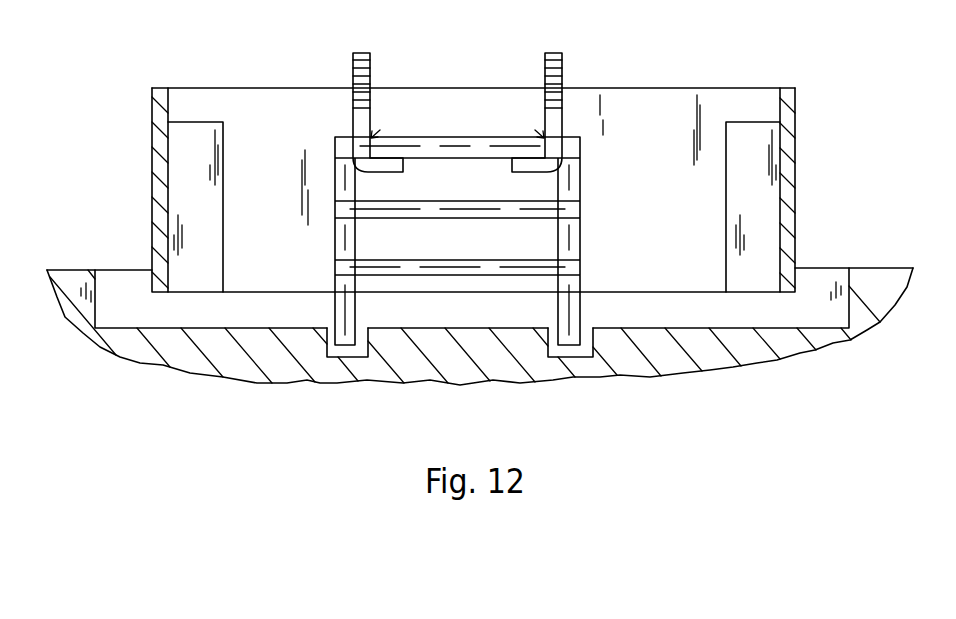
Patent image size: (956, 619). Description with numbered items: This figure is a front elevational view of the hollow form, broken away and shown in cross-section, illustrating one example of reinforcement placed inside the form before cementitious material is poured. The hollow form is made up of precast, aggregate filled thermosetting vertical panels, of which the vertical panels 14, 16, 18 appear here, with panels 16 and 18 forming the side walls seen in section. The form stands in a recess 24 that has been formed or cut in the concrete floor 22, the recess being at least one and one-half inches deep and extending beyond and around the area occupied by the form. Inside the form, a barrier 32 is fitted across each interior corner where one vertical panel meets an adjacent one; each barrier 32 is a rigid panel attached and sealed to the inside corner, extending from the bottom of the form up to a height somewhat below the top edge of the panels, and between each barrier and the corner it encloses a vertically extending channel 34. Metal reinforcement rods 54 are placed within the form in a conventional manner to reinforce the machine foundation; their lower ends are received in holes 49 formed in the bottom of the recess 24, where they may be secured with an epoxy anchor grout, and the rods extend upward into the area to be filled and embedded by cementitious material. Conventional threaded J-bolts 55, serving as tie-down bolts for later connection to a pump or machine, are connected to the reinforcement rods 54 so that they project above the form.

The vertical panel 14 is at (633, 130).
The vertical panel 16 is at (152, 147).
The vertical panel 18 is at (795, 140).
The concrete floor 22 is at (58, 271).
The recess 24 is at (95, 298).
The barrier 32 is at (203, 235).
The vertically extending channel 34 is at (184, 122).
The holes 49 is at (353, 353).
The reinforcement rods 54 is at (582, 176).
The J-bolts 55 is at (353, 118).